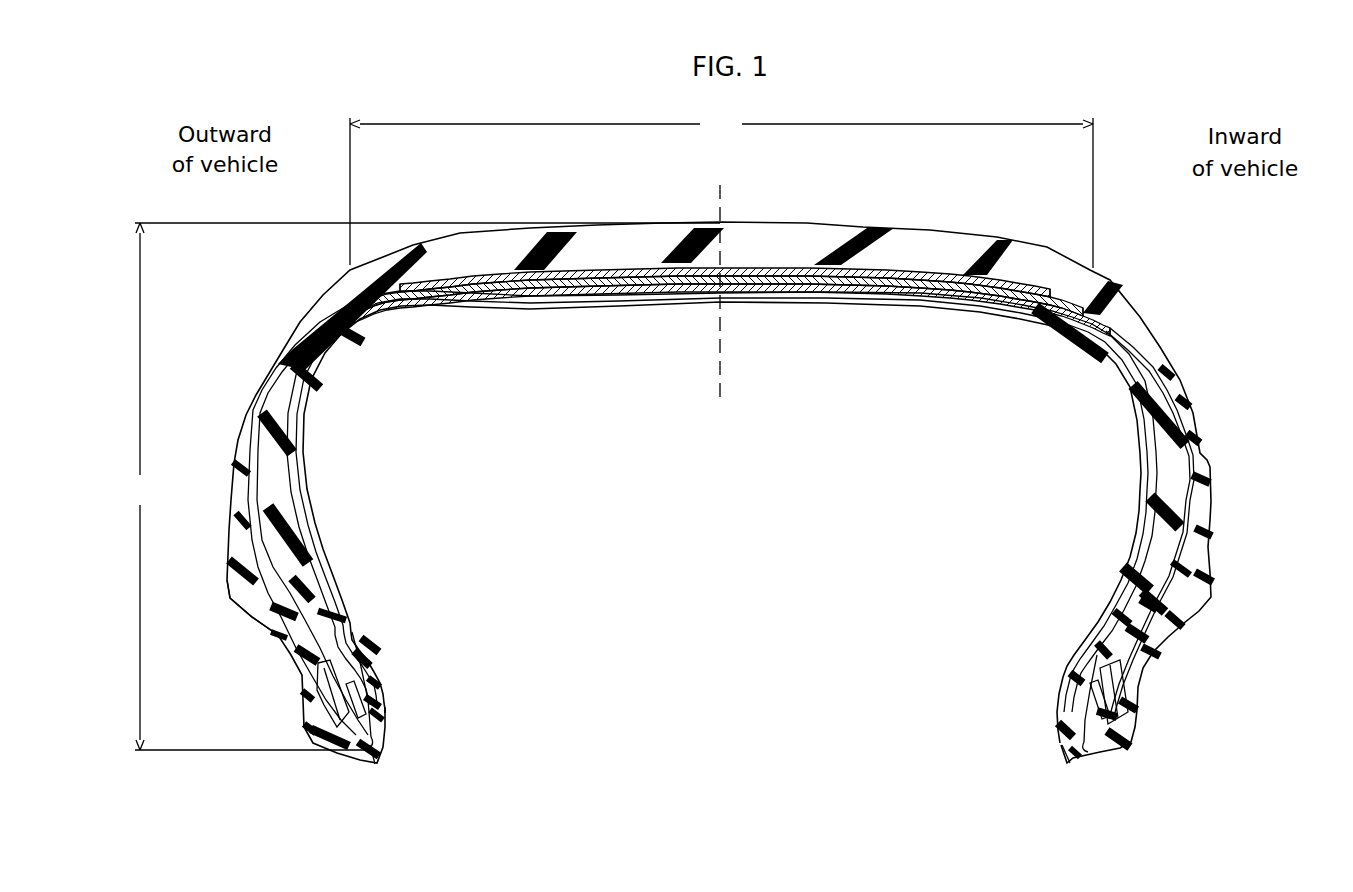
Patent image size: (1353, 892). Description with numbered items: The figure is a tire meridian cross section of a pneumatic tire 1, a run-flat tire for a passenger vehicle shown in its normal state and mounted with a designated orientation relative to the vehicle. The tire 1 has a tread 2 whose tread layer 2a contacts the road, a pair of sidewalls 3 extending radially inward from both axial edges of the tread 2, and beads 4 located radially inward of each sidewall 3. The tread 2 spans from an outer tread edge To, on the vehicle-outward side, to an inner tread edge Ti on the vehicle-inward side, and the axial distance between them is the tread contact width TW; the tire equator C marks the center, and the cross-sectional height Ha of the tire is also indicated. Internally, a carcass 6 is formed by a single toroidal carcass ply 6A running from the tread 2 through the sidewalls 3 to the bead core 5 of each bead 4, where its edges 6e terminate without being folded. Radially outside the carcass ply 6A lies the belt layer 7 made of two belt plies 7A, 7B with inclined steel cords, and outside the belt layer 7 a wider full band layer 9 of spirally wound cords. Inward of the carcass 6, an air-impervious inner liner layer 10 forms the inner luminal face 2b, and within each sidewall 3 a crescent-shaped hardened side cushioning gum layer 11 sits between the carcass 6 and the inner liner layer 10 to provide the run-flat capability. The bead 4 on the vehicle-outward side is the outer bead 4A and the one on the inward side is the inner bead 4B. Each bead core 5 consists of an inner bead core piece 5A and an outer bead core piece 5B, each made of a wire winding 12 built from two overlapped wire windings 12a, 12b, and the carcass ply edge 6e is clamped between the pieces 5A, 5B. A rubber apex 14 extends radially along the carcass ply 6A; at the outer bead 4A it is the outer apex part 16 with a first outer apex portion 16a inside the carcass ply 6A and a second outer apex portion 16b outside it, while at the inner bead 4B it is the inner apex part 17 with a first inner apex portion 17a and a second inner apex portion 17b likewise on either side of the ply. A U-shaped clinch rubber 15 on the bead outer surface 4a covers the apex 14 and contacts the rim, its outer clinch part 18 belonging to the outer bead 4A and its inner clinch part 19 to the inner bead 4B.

The pneumatic tire 1 is at (1116, 157).
The tread 2 is at (943, 203).
The tread layer 2a is at (808, 222).
The inner luminal face 2b is at (898, 298).
The sidewall 3 is at (1212, 398).
The bead 4 is at (262, 633).
The outer surface of the bead 4a is at (1178, 630).
The outer bead 4A is at (217, 622).
The inner bead 4B is at (1175, 685).
The bead core 5 is at (955, 650).
The inner bead core piece 5A is at (1083, 703).
The outer bead core piece 5B is at (1113, 675).
The carcass 6 is at (330, 347).
The carcass ply 6A is at (722, 501).
The edge of carcass ply 6e is at (342, 712).
The belt layer 7 is at (605, 386).
The belt ply 7A is at (623, 298).
The belt ply 7B is at (678, 297).
The band layer 9 is at (797, 300).
The inner liner layer 10 is at (530, 300).
The side cushioning gum layer 11 is at (300, 392).
The wire winding 12 is at (330, 803).
The wire winding 12a is at (342, 710).
The wire winding 12b is at (315, 680).
The rubber apex 14 is at (448, 606).
The clinch rubber 15 is at (380, 720).
The outer apex part 16 is at (312, 523).
The first outer apex portion 16a is at (327, 637).
The second outer apex portion 16b is at (275, 592).
The inner apex part 17 is at (975, 600).
The first inner apex portion 17a is at (1117, 633).
The second inner apex portion 17b is at (1143, 618).
The outer clinch part 18 is at (378, 757).
The inner clinch part 19 is at (1065, 752).
The outer tread edge To is at (348, 268).
The inner tread edge Ti is at (1093, 270).
The tread contact width TW is at (721, 190).
The cross-sectional height Ha is at (422, 486).
The tire equator C is at (720, 278).